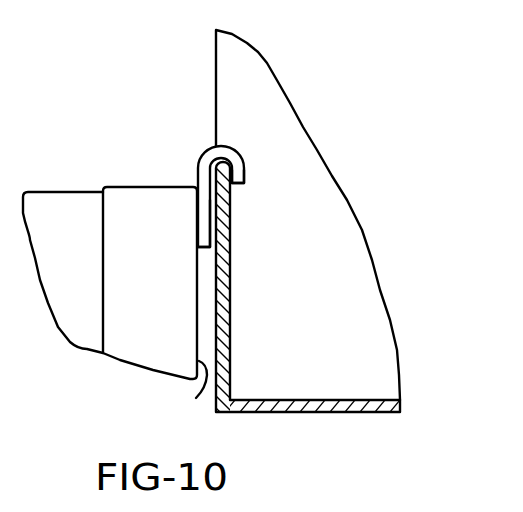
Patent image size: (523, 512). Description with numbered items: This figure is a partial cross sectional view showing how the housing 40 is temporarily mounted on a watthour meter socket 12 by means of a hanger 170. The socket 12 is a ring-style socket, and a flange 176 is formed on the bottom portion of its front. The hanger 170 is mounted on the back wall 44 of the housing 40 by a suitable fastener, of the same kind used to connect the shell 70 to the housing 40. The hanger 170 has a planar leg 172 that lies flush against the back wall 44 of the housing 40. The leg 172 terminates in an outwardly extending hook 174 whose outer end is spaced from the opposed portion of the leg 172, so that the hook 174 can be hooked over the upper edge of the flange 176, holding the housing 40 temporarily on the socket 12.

The socket 12 is at (372, 108).
The housing 40 is at (130, 195).
The back wall 44 is at (196, 398).
The shell 70 is at (53, 180).
The hanger 170 is at (192, 148).
The planar leg 172 is at (205, 210).
The hook 174 is at (246, 166).
The flange 176 is at (224, 272).